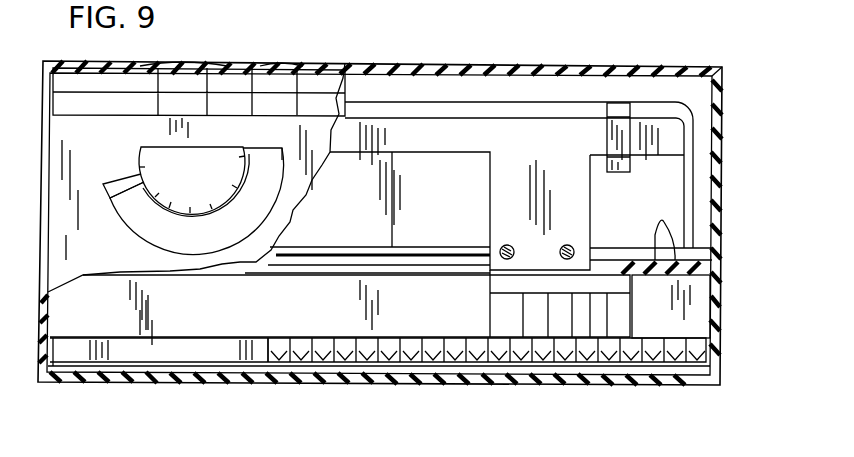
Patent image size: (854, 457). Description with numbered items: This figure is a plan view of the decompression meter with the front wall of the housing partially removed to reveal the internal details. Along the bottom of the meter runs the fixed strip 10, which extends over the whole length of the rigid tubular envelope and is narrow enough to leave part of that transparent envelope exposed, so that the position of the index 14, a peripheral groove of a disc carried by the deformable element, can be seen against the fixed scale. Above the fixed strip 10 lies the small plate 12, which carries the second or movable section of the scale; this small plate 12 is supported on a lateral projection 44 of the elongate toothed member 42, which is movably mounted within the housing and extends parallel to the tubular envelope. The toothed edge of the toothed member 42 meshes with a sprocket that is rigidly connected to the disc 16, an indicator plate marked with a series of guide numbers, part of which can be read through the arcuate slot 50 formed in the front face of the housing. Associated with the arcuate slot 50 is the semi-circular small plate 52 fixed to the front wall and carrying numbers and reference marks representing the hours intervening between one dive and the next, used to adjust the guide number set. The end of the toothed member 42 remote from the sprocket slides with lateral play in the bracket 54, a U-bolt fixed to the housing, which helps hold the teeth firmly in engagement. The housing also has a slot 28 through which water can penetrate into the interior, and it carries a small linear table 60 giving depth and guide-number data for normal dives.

The fixed strip 10 is at (225, 320).
The small plate 12 is at (613, 283).
The index 14 is at (292, 342).
The disc 16 is at (258, 204).
The slot 28 is at (140, 66).
The toothed member 42 is at (454, 140).
The lateral projection 44 is at (505, 190).
The arcuate slot 50 is at (128, 222).
The semi-circular small plate 52 is at (158, 150).
The bracket 54 is at (613, 113).
The linear table 60 is at (60, 85).